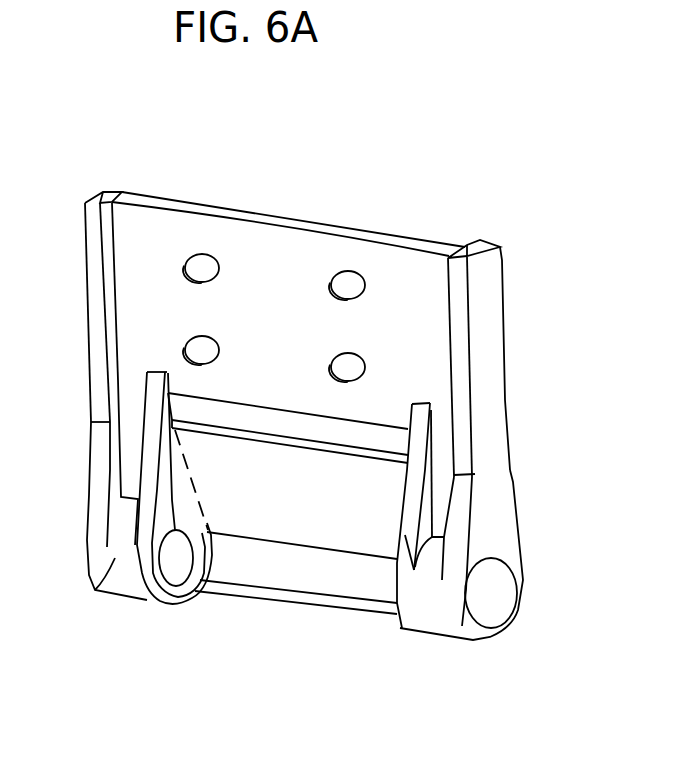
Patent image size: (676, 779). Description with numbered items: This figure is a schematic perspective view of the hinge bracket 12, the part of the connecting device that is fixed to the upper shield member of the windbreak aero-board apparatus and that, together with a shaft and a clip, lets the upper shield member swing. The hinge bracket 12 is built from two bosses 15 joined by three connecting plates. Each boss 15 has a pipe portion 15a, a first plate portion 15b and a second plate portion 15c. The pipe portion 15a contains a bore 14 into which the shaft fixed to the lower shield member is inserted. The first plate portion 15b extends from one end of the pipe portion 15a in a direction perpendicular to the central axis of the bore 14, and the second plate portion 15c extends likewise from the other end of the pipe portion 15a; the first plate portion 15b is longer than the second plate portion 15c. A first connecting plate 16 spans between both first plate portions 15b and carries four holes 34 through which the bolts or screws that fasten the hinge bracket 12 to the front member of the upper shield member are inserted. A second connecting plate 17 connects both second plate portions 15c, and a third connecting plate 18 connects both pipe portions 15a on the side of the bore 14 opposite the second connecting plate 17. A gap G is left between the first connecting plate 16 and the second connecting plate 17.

The hinge bracket 12 is at (508, 380).
The bore 14 is at (182, 567).
The boss 15 is at (90, 450).
The pipe portion 15a is at (95, 590).
The first plate portion 15b is at (92, 318).
The second plate portion 15c is at (147, 602).
The first connecting plate 16 is at (378, 257).
The second connecting plate 17 is at (268, 455).
The third connecting plate 18 is at (305, 605).
The holes 34 is at (200, 336).
The gap G is at (220, 395).